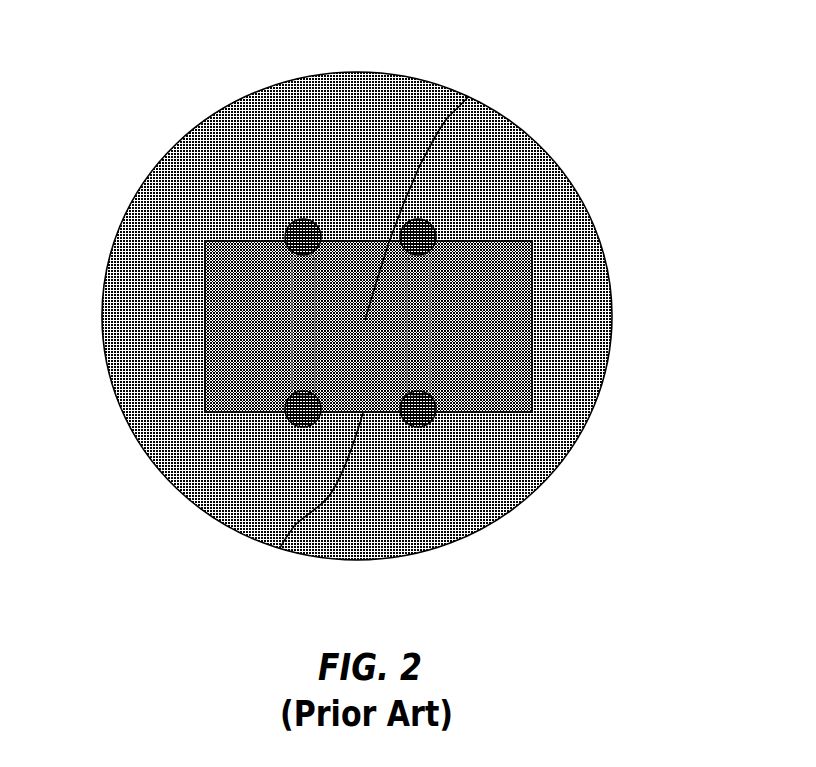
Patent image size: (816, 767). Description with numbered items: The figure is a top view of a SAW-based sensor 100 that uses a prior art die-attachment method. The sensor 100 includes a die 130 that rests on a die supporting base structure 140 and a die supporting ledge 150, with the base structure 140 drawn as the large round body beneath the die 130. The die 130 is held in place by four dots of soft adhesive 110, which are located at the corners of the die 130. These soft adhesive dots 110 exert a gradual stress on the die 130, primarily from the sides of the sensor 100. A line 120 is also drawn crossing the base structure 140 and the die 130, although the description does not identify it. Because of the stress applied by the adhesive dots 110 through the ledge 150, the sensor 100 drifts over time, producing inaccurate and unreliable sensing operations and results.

The SAW-based sensor 100 is at (657, 90).
The soft adhesive dots 110 is at (300, 233).
The upper crack line 120 is at (468, 97).
The die 130 is at (280, 548).
The die supporting base structure 140 is at (523, 462).
The die supporting ledge 150 is at (298, 312).